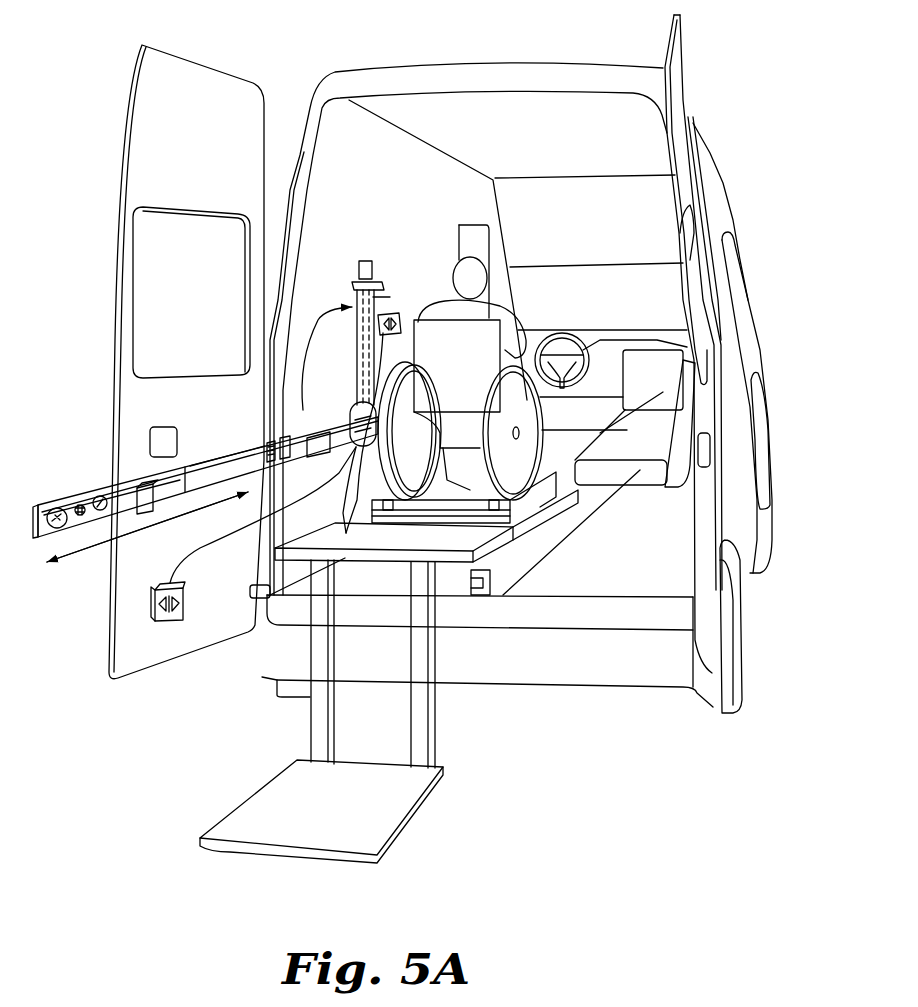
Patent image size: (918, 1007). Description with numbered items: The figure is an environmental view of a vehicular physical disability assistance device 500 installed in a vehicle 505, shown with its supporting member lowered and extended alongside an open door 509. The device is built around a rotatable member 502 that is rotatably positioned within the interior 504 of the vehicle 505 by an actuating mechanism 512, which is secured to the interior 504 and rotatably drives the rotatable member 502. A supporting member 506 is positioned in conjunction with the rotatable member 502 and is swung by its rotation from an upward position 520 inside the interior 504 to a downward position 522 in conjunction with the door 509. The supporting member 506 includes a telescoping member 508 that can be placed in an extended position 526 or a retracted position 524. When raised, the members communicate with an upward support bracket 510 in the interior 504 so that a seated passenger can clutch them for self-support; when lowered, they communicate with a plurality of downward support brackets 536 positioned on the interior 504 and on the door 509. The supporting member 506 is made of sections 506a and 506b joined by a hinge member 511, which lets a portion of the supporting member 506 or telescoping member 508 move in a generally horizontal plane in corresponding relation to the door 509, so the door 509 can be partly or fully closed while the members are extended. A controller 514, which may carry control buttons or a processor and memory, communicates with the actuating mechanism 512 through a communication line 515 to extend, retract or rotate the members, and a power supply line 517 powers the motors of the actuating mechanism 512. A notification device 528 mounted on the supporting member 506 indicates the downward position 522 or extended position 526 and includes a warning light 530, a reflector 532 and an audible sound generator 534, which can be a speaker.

The vehicular physical disability assistance device 500 is at (50, 387).
The rotatable member 502 is at (392, 497).
The interior 504 is at (433, 220).
The vehicle 505 is at (755, 123).
The supporting member 506 is at (187, 455).
The section of supporting member 506a is at (240, 362).
The section of supporting member 506b is at (215, 465).
The telescoping member 508 is at (176, 458).
The door 509 is at (132, 174).
The upward support bracket 510 is at (378, 280).
The hinge member 511 is at (270, 440).
The actuating mechanism 512 is at (341, 405).
The controller 514 is at (168, 621).
The communication line 515 is at (212, 565).
The power supply line 517 is at (344, 522).
The upward position 520 is at (387, 298).
The downward position 522 is at (25, 532).
The retracted position 524 is at (353, 250).
The extended position 526 is at (101, 557).
The notification device 528 is at (78, 477).
The warning light 530 is at (147, 543).
The reflector 532 is at (100, 496).
The audible sound generator 534 is at (58, 508).
The downward support bracket 536 is at (308, 418).